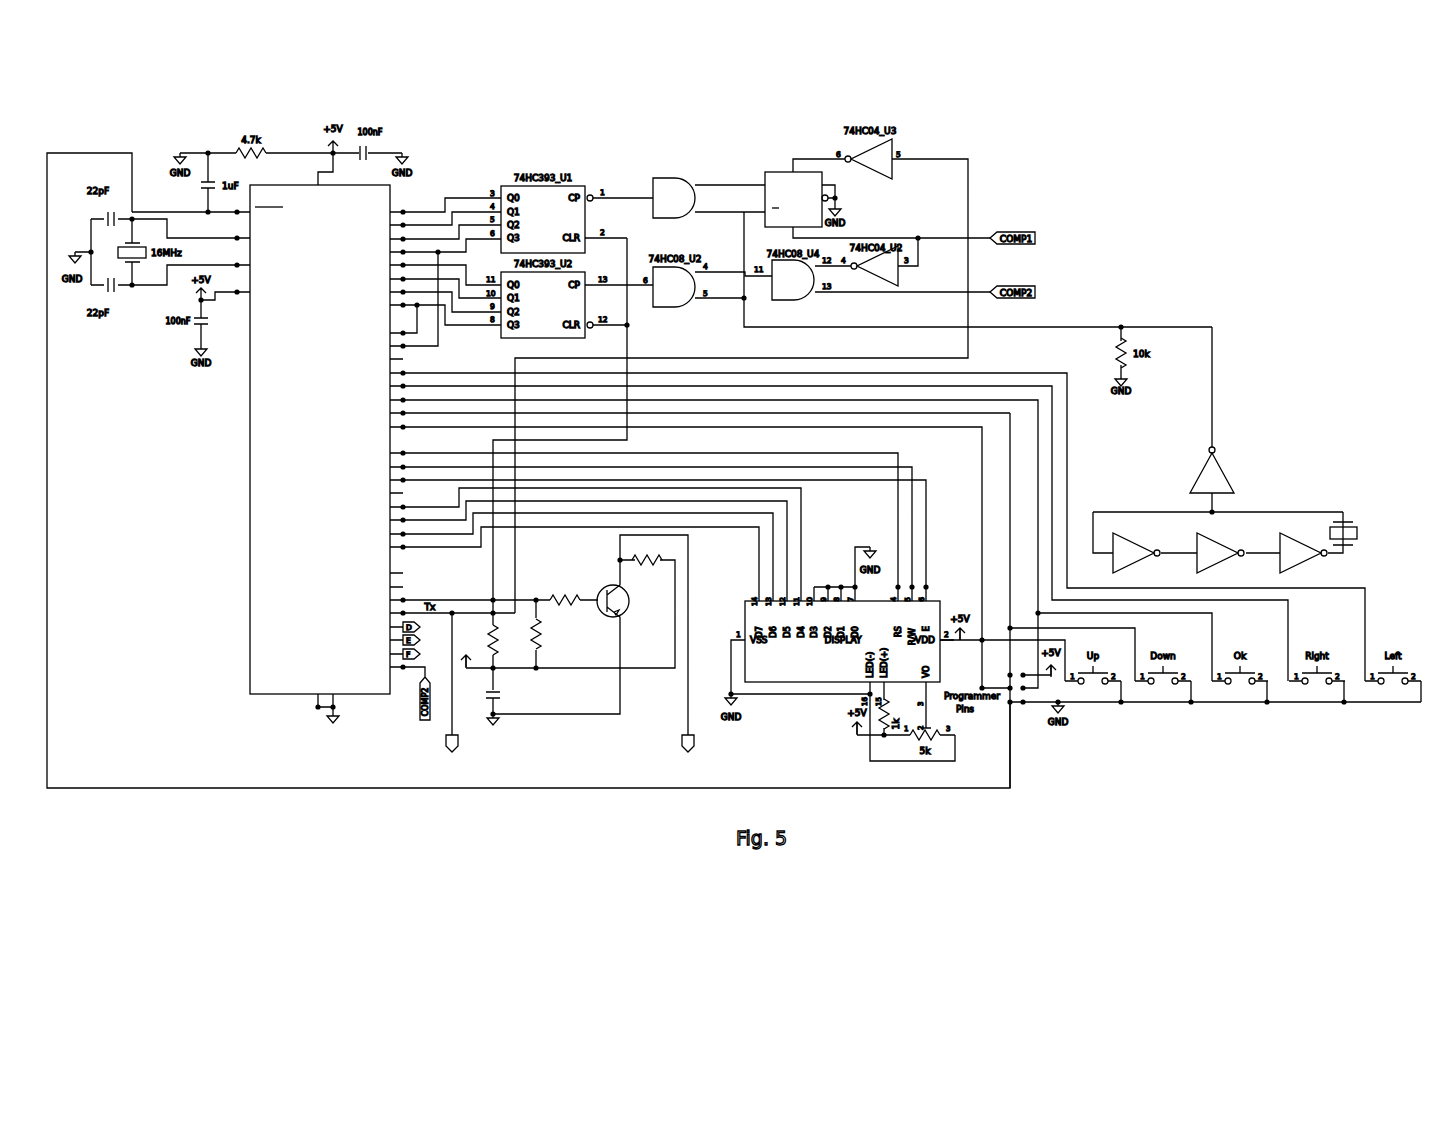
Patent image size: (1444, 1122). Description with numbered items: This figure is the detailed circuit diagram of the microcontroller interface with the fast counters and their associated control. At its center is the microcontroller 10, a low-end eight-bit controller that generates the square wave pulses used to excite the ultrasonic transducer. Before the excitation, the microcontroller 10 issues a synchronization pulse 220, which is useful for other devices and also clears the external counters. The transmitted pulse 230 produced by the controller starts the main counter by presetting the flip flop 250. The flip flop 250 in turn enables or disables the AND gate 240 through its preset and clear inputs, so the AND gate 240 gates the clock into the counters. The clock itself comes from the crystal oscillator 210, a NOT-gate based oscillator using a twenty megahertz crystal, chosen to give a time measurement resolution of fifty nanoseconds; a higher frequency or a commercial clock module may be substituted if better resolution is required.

The microcontroller 10 is at (298, 385).
The crystal oscillator 210 is at (1295, 498).
The synchronization pulse 220 is at (454, 597).
The transmitted pulse 230 is at (440, 741).
The AND gate 240 is at (655, 180).
The flip flop 250 is at (787, 170).